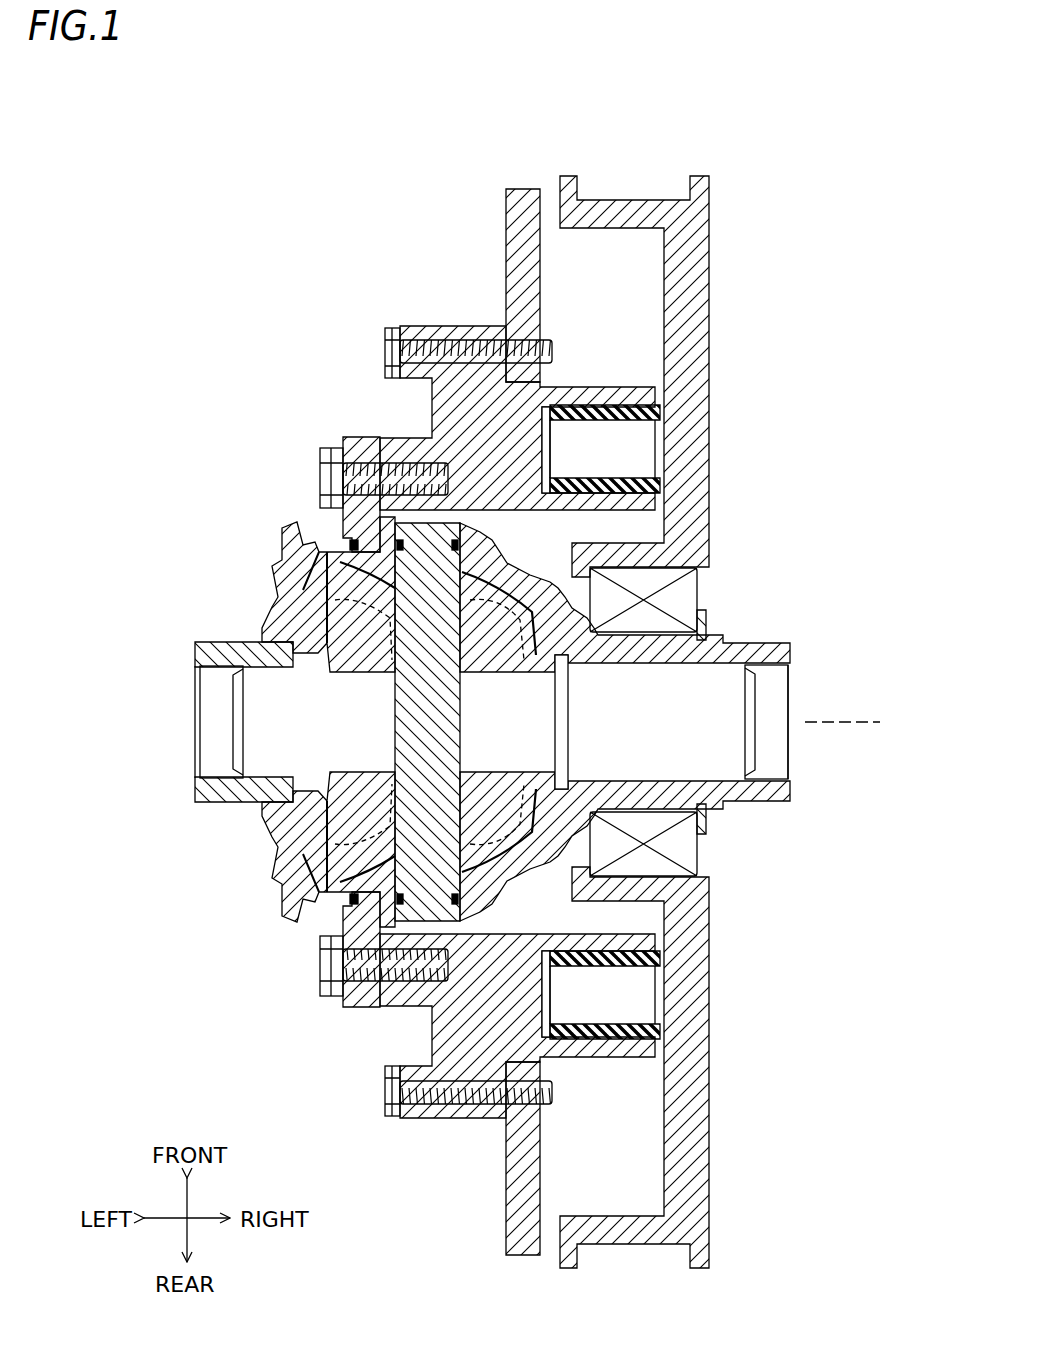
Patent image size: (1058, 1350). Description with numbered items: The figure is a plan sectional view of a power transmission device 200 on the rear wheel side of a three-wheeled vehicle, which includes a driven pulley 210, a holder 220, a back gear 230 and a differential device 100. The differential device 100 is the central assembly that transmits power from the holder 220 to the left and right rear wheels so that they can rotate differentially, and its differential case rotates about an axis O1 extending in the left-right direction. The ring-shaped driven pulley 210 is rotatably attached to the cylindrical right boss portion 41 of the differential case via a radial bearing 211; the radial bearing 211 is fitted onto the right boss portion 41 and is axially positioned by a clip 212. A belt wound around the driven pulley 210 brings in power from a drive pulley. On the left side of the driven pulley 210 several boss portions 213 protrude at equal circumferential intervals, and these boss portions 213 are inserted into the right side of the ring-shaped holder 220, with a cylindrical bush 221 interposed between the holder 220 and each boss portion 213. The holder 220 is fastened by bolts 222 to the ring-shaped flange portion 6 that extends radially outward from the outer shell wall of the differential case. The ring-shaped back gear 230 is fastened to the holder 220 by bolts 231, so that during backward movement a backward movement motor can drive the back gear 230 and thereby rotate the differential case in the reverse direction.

The power transmission device 200 is at (258, 150).
The differential device 100 is at (258, 622).
The right boss portion 41 is at (762, 637).
The driven pulley 210 is at (712, 276).
The back gear 230 is at (518, 186).
The holder 220 is at (428, 325).
The cylindrical bush 221 is at (600, 410).
The boss portion 213 is at (600, 448).
The bolt 231 is at (382, 355).
The bolt 222 is at (318, 478).
The flange portion 6 is at (360, 437).
The radial bearing 211 is at (703, 590).
The clip 212 is at (703, 830).
The axis O1 is at (864, 724).